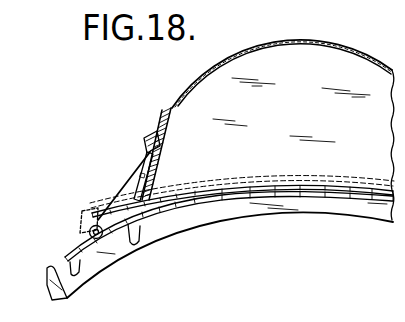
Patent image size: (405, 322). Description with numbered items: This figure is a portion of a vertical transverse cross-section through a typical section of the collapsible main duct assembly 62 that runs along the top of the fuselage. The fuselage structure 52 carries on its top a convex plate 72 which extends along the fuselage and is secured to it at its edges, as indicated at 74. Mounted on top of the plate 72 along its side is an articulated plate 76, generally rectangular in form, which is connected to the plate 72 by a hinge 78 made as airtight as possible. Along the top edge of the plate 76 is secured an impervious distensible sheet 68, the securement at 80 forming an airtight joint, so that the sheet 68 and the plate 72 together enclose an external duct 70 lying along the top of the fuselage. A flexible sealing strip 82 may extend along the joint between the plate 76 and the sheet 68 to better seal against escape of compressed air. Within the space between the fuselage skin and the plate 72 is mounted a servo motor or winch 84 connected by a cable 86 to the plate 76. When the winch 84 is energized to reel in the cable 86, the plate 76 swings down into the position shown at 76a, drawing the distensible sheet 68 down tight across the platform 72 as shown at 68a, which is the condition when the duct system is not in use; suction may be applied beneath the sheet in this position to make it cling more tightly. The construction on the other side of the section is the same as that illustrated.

The fuselage structure 52 is at (56, 291).
The main duct assembly 62 is at (333, 40).
The impervious distensible sheet 68 is at (247, 48).
The collapsed sheet position 68a is at (267, 184).
The external duct 70 is at (308, 109).
The convex plate 72 is at (207, 190).
The plate edge securement 74 is at (71, 257).
The articulated plate 76 is at (242, 187).
The swung-down plate position 76a is at (91, 211).
The hinge 78 is at (135, 196).
The sheet securement 80 is at (144, 136).
The flexible sealing strip 82 is at (171, 154).
The servo motor or winch 84 is at (106, 229).
The cable 86 is at (138, 186).